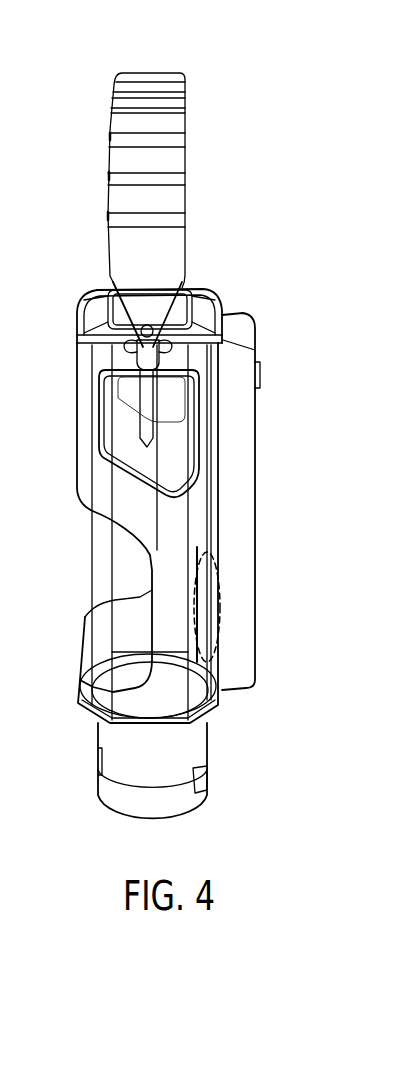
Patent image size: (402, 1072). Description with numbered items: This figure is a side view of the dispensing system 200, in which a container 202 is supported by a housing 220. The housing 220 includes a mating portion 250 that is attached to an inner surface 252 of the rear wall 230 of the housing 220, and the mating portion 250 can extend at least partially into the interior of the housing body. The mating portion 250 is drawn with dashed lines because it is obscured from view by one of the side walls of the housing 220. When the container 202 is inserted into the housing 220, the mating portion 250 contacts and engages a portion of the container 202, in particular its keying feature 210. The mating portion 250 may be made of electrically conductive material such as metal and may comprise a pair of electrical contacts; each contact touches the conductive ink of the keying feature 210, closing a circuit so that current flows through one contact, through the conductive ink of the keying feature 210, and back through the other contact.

The dispensing system 200 is at (165, 422).
The container 202 is at (90, 576).
The keying feature 210 is at (200, 560).
The housing 220 is at (77, 349).
The rear wall 230 is at (257, 457).
The mating portion 250 is at (218, 612).
The inner surface 252 is at (219, 464).